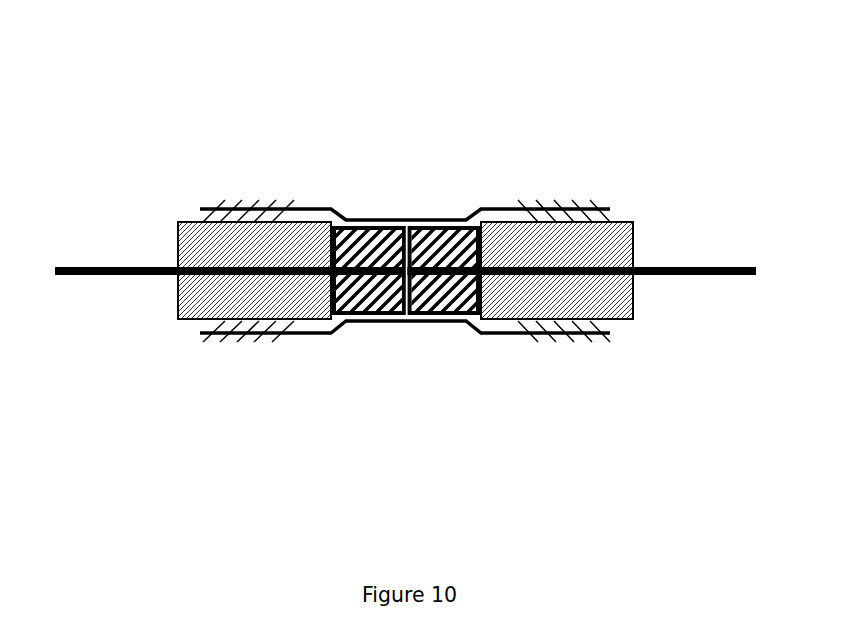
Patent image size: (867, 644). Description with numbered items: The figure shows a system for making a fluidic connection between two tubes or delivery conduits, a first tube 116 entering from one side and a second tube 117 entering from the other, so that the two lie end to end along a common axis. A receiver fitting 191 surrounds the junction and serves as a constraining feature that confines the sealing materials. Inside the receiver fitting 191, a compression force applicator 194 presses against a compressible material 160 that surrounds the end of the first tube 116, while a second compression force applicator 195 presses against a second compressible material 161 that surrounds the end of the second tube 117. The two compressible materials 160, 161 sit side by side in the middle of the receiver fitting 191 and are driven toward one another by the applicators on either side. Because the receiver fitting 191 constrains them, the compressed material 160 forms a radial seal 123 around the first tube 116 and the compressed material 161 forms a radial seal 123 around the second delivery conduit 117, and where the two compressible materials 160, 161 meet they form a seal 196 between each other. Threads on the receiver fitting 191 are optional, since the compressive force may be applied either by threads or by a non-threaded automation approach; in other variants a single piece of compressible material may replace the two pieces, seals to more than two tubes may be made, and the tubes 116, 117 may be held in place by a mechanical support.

The first tube 116 is at (98, 265).
The second tube 117 is at (697, 265).
The radial seal 123 is at (361, 263).
The compressible material 160 is at (362, 302).
The second compressible material 161 is at (455, 293).
The receiver fitting 191 is at (335, 220).
The compression force applicator 194 is at (178, 317).
The second compression force applicator 195 is at (615, 303).
The seal 196 is at (406, 222).